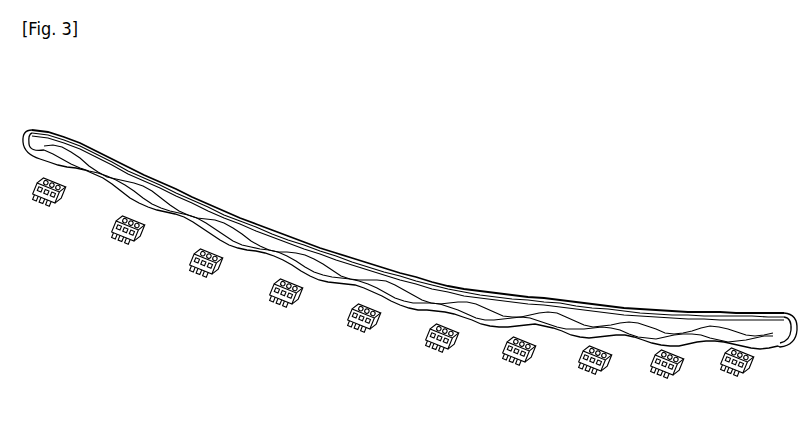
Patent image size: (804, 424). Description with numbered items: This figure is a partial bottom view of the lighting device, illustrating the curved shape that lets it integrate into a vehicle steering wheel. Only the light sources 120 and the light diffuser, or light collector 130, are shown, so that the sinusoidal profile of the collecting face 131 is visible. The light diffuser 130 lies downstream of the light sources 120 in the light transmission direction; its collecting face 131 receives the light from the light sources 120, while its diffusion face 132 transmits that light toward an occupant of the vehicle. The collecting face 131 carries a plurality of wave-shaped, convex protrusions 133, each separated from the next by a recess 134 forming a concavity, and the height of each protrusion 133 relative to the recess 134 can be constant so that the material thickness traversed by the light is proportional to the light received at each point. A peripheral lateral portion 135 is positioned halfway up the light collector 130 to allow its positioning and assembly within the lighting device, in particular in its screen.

The light sources 120 is at (190, 270).
The light diffuser 130 is at (533, 312).
The light collecting face 131 is at (47, 165).
The diffusion face 132 is at (734, 295).
The protrusions 133 is at (138, 208).
The recess 134 is at (263, 248).
The peripheral lateral portion 135 is at (402, 274).